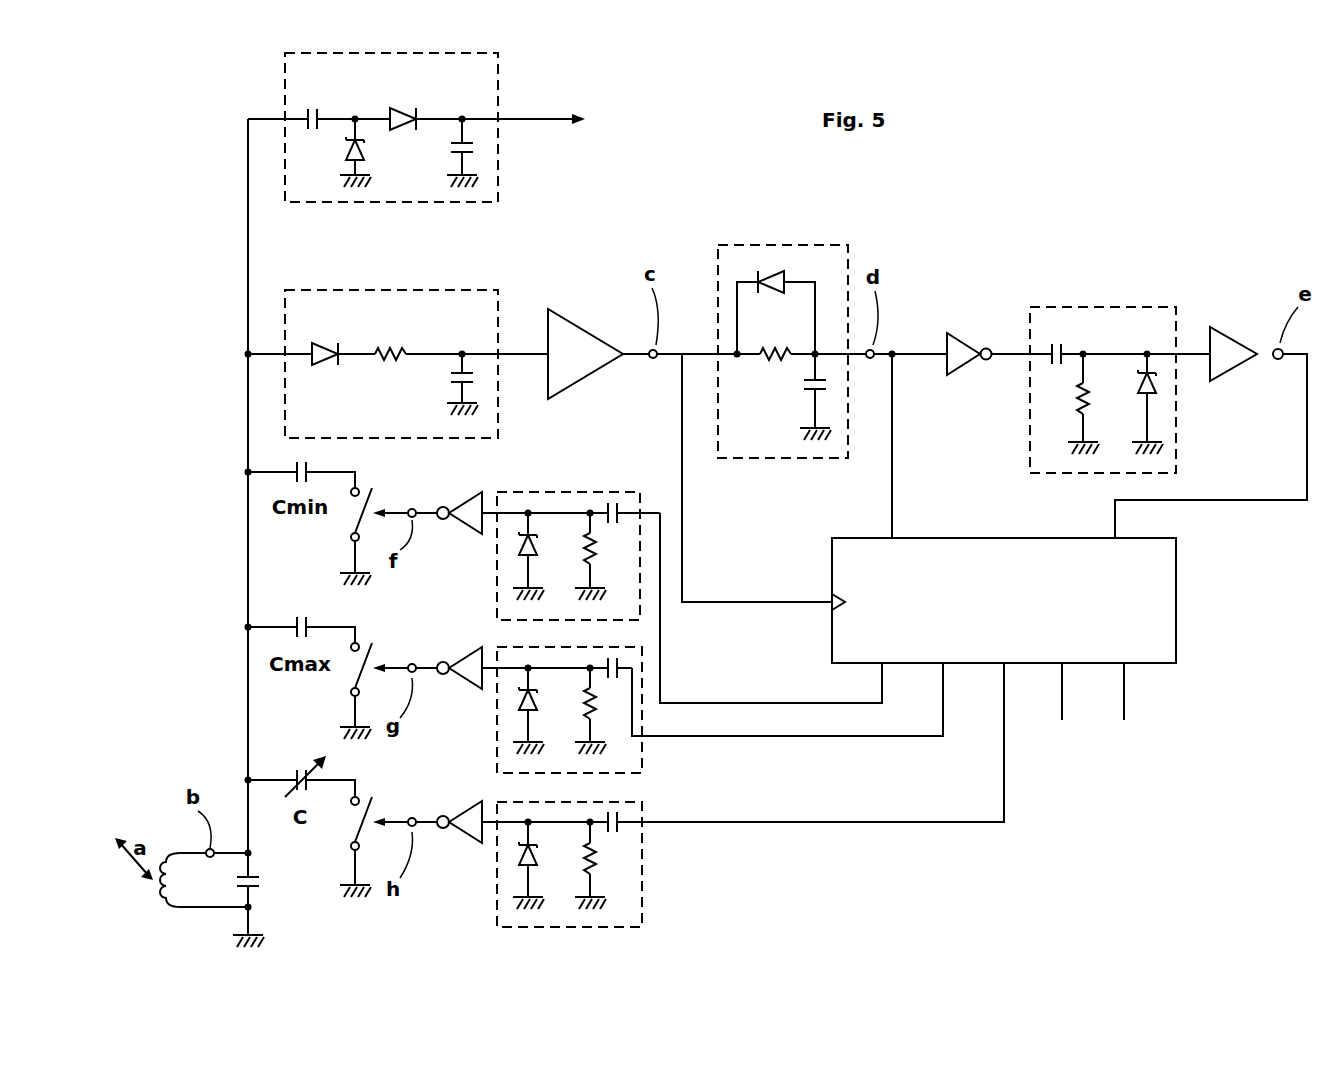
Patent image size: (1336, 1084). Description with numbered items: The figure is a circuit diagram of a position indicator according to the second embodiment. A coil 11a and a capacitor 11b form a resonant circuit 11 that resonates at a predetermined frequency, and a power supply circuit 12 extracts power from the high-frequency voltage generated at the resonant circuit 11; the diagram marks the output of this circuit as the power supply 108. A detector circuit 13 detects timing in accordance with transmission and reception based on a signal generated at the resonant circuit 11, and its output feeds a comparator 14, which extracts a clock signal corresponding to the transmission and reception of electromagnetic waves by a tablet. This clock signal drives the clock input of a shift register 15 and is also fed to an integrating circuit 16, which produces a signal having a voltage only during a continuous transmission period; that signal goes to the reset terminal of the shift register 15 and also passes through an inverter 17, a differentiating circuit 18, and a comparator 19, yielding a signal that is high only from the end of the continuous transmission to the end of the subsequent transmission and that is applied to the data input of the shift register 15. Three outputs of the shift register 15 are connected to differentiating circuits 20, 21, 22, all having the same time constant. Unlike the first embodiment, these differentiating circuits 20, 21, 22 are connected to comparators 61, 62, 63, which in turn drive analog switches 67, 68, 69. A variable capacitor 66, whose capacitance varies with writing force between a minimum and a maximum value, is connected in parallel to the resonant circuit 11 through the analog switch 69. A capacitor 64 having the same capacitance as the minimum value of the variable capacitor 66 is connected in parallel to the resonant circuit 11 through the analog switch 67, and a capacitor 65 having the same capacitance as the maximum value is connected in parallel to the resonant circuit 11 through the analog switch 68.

The resonant circuit 11 is at (210, 902).
The coil 11a is at (160, 900).
The capacitor 11b is at (265, 880).
The power supply circuit 12 is at (498, 155).
The power supply 108 is at (578, 91).
The detector circuit 13 is at (498, 313).
The comparator 14 is at (584, 322).
The shift register 15 is at (1176, 610).
The integrating circuit 16 is at (742, 243).
The inverter 17 is at (958, 328).
The differentiating circuit 18 is at (1065, 305).
The comparator 19 is at (1233, 334).
The differentiating circuit 20 is at (578, 490).
The differentiating circuit 21 is at (645, 757).
The differentiating circuit 22 is at (645, 885).
The comparator 61 is at (462, 527).
The comparator 62 is at (462, 683).
The comparator 63 is at (458, 838).
The capacitor 64 is at (310, 462).
The capacitor 65 is at (310, 618).
The variable capacitor 66 is at (292, 768).
The analog switch 67 is at (350, 515).
The analog switch 68 is at (350, 672).
The analog switch 69 is at (350, 825).